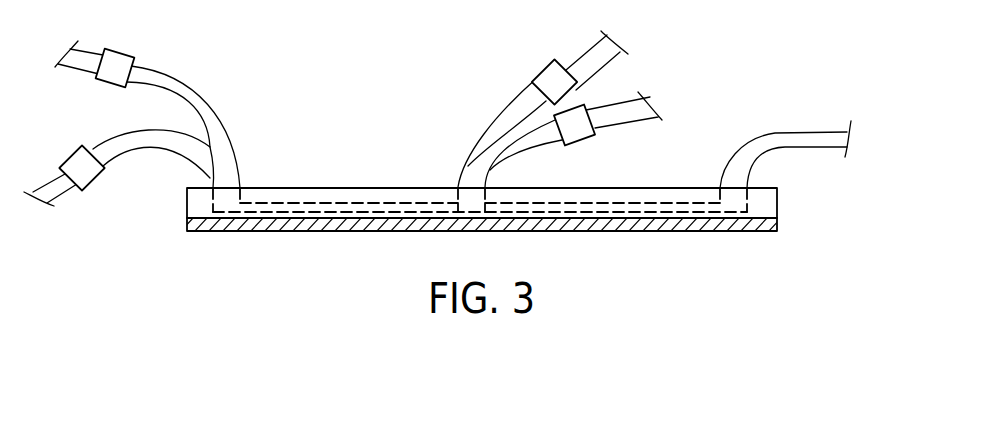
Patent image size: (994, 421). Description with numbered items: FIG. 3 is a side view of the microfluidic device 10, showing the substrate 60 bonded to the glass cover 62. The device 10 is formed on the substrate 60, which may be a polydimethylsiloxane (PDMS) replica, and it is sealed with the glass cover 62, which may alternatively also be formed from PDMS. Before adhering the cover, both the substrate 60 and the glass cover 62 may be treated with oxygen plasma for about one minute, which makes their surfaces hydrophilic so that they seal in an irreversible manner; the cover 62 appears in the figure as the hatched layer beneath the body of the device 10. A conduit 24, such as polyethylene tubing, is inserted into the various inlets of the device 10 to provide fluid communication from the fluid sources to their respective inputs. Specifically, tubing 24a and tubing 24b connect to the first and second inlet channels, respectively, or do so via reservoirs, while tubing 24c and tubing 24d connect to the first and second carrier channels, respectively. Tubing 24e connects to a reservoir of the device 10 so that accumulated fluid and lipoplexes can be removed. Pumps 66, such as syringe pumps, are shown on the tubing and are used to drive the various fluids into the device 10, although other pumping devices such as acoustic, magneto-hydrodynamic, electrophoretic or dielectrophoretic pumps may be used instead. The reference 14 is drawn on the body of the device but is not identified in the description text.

The device 10 is at (725, 81).
The substrate / base 14 is at (332, 201).
The conduit 24 is at (233, 126).
The tubing 24a is at (157, 77).
The tubing 24b is at (127, 133).
The tubing 24c is at (496, 120).
The tubing 24d is at (531, 145).
The tubing 24e is at (792, 143).
The substrate 60 is at (664, 199).
The glass cover 62 is at (743, 232).
The pump 66 is at (106, 50).